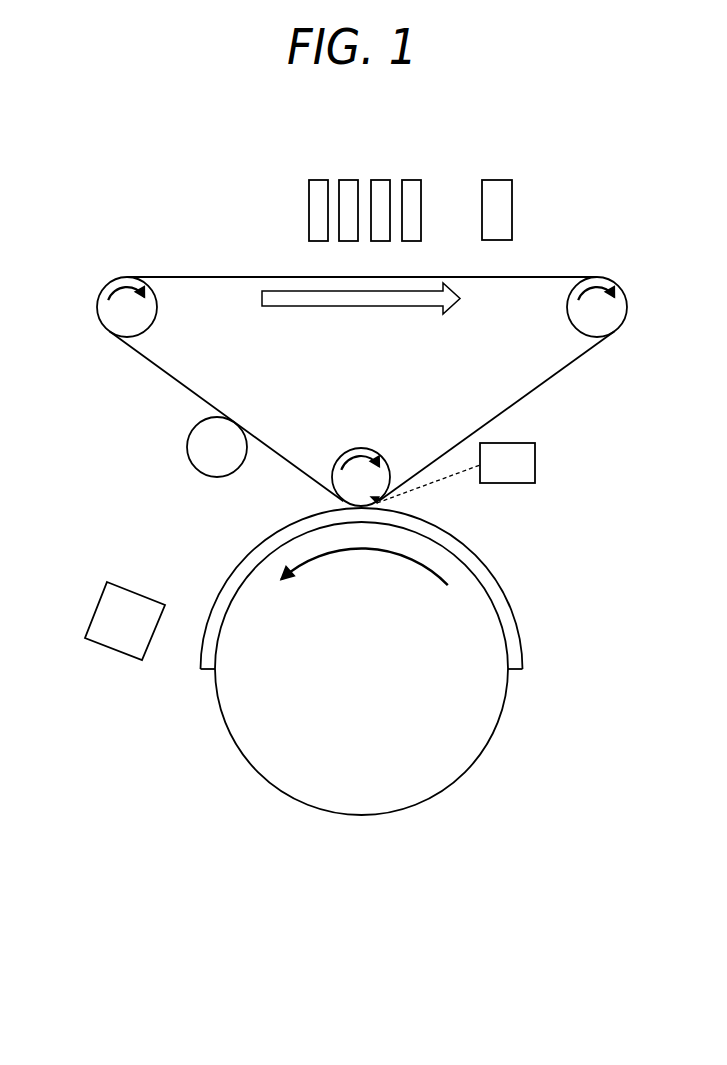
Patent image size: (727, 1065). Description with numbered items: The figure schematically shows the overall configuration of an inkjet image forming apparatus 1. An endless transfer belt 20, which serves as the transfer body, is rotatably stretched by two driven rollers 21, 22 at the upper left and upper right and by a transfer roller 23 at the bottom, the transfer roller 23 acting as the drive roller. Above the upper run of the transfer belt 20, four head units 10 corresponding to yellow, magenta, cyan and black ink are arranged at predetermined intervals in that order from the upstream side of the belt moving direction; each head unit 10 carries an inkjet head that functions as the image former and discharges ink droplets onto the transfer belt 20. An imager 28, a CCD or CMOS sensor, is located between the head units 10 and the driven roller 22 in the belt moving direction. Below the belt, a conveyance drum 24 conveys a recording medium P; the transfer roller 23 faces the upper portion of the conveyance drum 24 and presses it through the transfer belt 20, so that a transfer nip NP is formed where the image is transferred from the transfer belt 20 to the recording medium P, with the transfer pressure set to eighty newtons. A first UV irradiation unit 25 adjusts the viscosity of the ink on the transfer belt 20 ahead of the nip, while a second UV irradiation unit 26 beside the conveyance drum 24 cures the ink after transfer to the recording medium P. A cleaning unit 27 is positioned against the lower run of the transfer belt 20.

The inkjet image forming apparatus 1 is at (452, 97).
The head unit 10 is at (340, 238).
The transfer belt 20 is at (188, 390).
The driven roller 21 is at (121, 278).
The driven roller 22 is at (597, 278).
The transfer roller 23 is at (333, 478).
The conveyance drum 24 is at (363, 800).
The first ultraviolet (UV) irradiation unit 25 is at (535, 456).
The second UV irradiation unit 26 is at (95, 610).
The cleaning unit 27 is at (188, 455).
The imager 28 is at (512, 192).
The transfer nip NP is at (383, 503).
The recording medium P is at (516, 641).